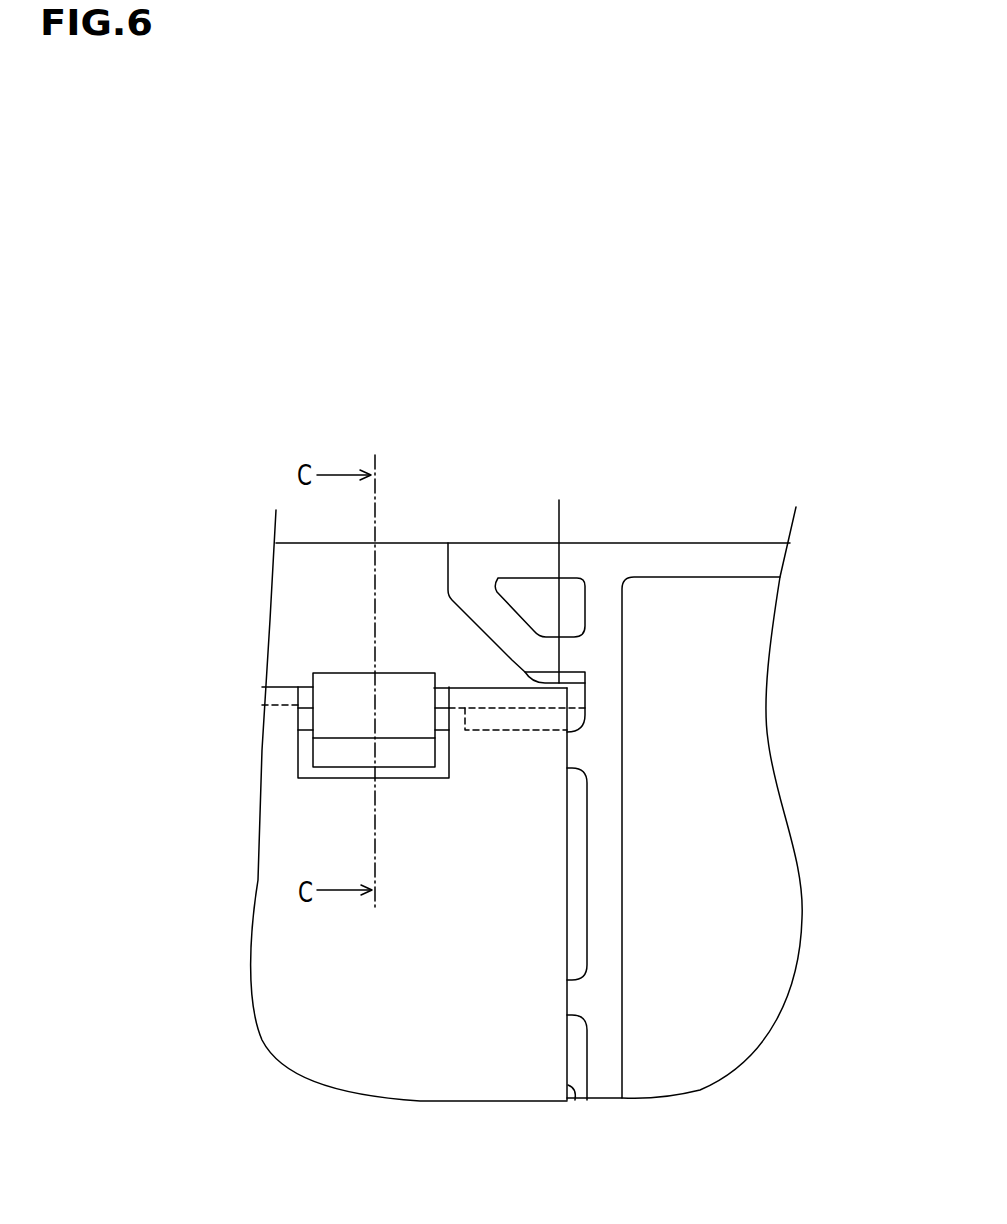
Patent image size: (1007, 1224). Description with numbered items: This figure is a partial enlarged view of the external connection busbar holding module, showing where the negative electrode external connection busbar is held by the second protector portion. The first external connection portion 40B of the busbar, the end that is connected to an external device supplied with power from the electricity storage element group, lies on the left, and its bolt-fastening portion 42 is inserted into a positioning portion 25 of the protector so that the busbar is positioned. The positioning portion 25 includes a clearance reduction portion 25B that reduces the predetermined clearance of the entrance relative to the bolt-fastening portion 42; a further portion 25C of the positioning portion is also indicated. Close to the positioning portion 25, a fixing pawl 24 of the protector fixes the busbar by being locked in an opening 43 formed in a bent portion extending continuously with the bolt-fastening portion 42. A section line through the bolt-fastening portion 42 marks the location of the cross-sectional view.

The fixing pawl 24 is at (343, 690).
The positioning portion 25 is at (488, 526).
The clearance reduction portion 25B is at (567, 577).
The engaging portion 25C is at (582, 663).
The first external connection portion 40B is at (303, 834).
The bolt-fastening portion 42 is at (305, 697).
The opening 43 is at (306, 718).